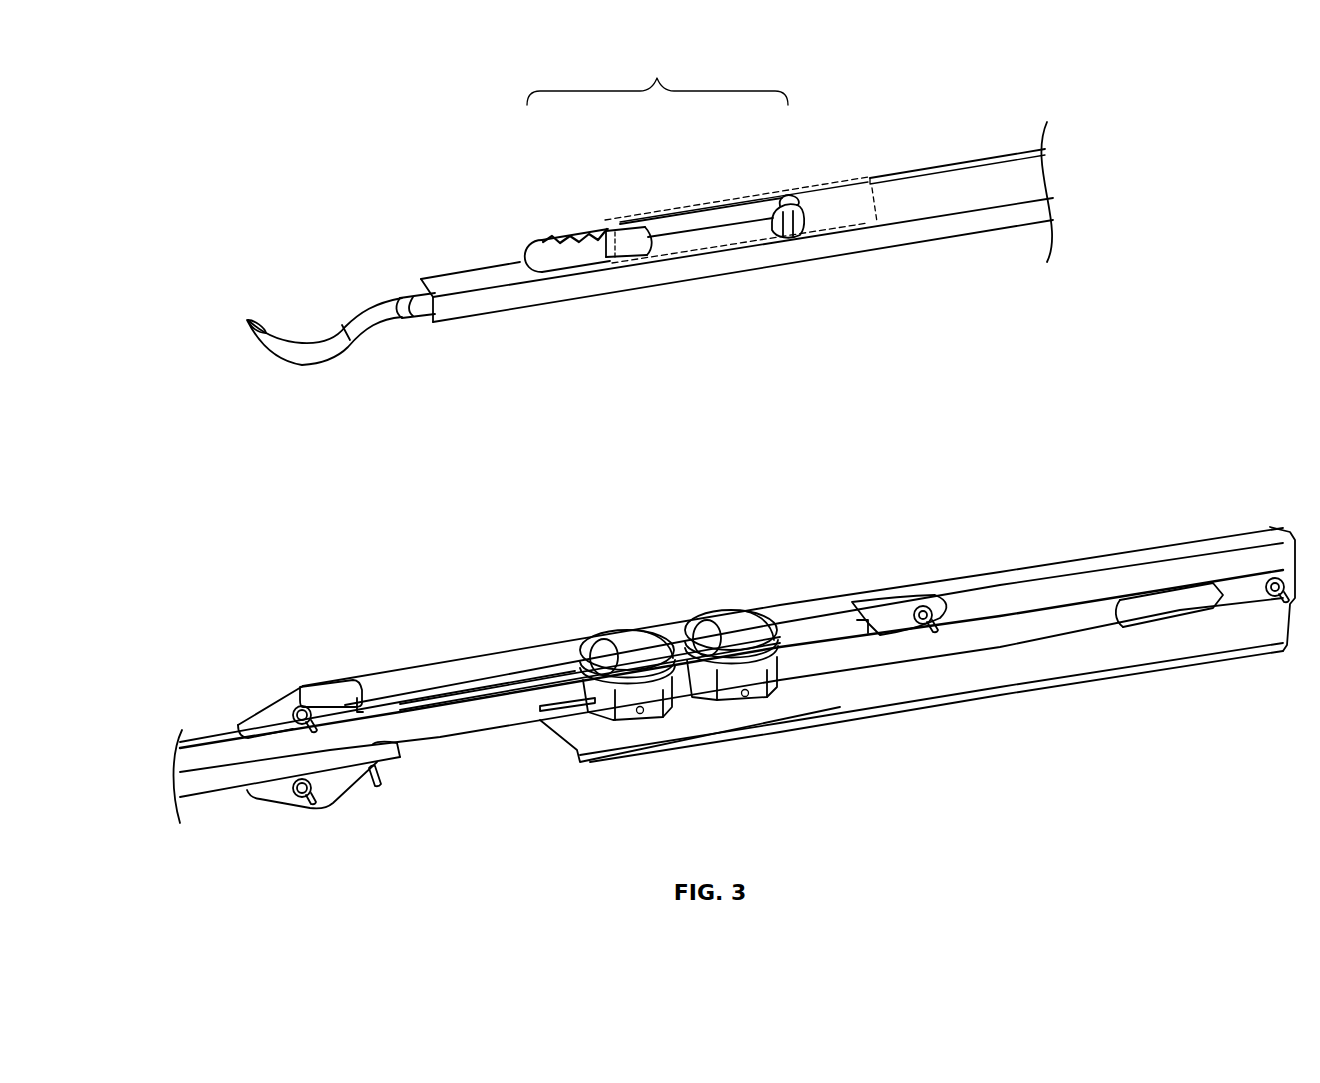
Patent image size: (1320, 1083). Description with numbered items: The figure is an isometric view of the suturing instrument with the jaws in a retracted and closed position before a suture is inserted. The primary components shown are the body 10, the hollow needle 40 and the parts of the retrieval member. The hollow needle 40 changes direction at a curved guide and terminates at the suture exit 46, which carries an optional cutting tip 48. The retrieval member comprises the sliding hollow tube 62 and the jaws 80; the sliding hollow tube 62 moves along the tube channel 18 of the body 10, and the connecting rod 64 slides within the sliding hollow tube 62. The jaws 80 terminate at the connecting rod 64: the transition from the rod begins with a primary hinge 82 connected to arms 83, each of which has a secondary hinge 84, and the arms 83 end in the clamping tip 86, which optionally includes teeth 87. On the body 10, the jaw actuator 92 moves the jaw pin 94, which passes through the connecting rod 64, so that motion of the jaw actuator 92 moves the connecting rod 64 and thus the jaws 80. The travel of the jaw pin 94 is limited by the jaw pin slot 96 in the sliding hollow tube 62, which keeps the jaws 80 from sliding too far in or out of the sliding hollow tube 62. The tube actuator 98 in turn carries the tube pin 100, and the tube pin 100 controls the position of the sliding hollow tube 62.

The body 10 is at (995, 516).
The tube channel 18 is at (1172, 598).
The hollow needle 40 is at (726, 290).
The suture exit 46 is at (255, 315).
The cutting tip 48 is at (245, 328).
The sliding hollow tube 62 is at (960, 172).
The connecting rod 64 is at (835, 215).
The jaws 80 is at (657, 75).
The primary hinge 82 is at (782, 205).
The arms 83 is at (697, 228).
The secondary hinge 84 is at (625, 238).
The clamping tip 86 is at (548, 178).
The teeth 87 is at (535, 245).
The jaw actuator 92 is at (623, 638).
The jaw pin 94 is at (641, 715).
The jaw pin slot 96 is at (565, 710).
The tube actuator 98 is at (728, 625).
The tube pin 100 is at (746, 697).